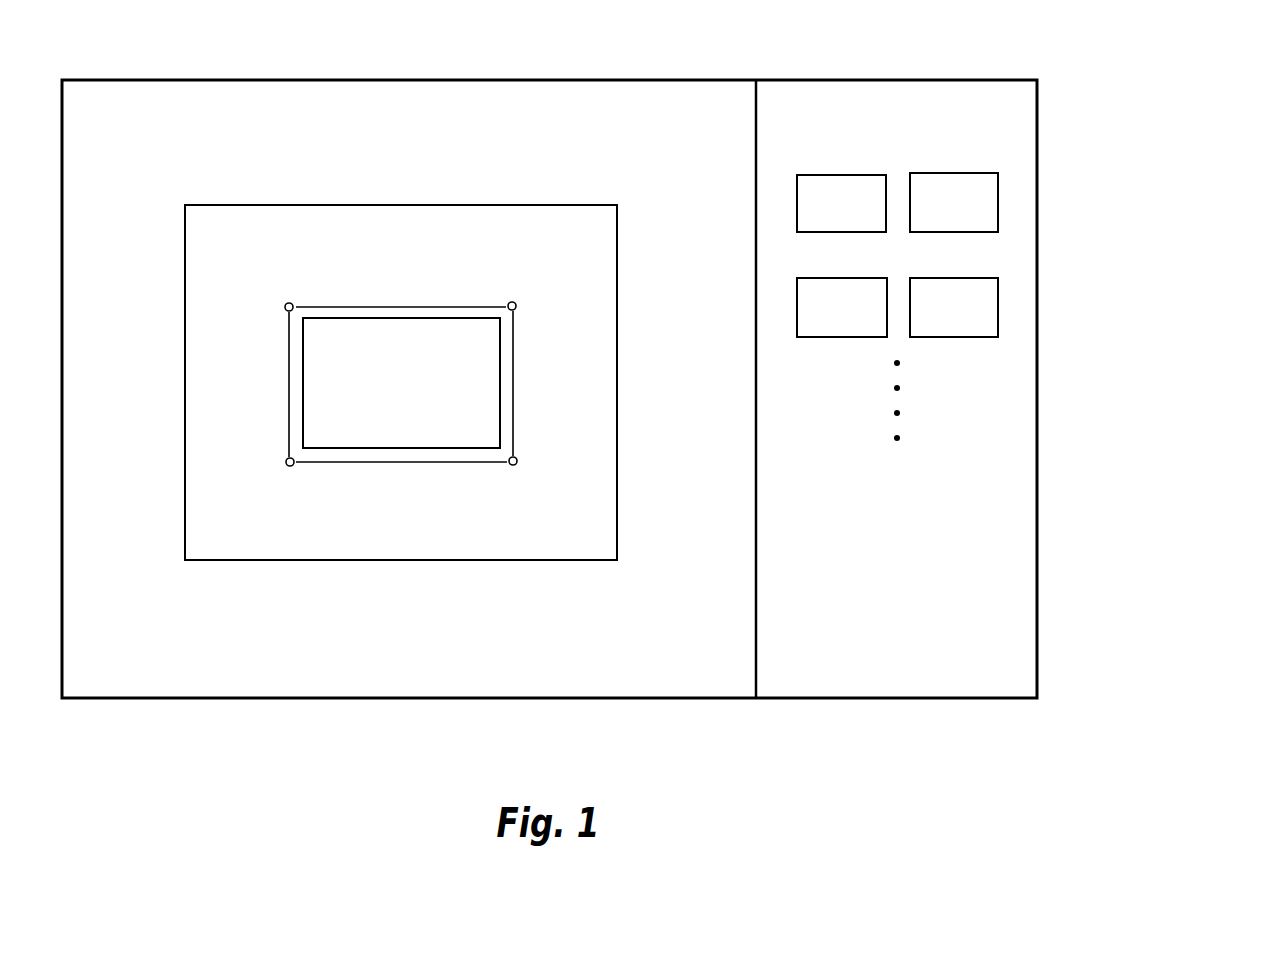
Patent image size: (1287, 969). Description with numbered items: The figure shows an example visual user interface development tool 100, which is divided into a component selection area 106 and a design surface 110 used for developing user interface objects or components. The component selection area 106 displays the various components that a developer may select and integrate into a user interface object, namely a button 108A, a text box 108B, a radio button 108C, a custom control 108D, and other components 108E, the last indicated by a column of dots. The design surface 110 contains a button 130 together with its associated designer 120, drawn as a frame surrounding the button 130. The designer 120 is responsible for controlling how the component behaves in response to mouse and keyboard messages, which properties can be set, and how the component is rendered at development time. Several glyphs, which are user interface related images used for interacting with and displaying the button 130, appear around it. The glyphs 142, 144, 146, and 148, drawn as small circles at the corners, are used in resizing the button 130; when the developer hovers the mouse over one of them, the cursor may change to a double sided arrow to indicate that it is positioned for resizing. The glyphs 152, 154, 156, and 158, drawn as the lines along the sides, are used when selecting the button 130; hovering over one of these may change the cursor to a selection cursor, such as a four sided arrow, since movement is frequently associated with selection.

The visual user interface development tool 100 is at (1128, 113).
The component selection area 106 is at (977, 674).
The button 108A is at (848, 173).
The text box 108B is at (943, 173).
The radio button 108C is at (848, 277).
The custom control 108D is at (943, 277).
The other components 108E is at (896, 412).
The design surface 110 is at (676, 674).
The designer 120 is at (553, 540).
The button 130 is at (444, 440).
The resize glyph 142 is at (513, 302).
The resize glyph 144 is at (518, 460).
The resize glyph 146 is at (287, 466).
The resize glyph 148 is at (287, 303).
The selection glyph 152 is at (513, 378).
The selection glyph 154 is at (399, 465).
The selection glyph 156 is at (289, 377).
The selection glyph 158 is at (401, 304).